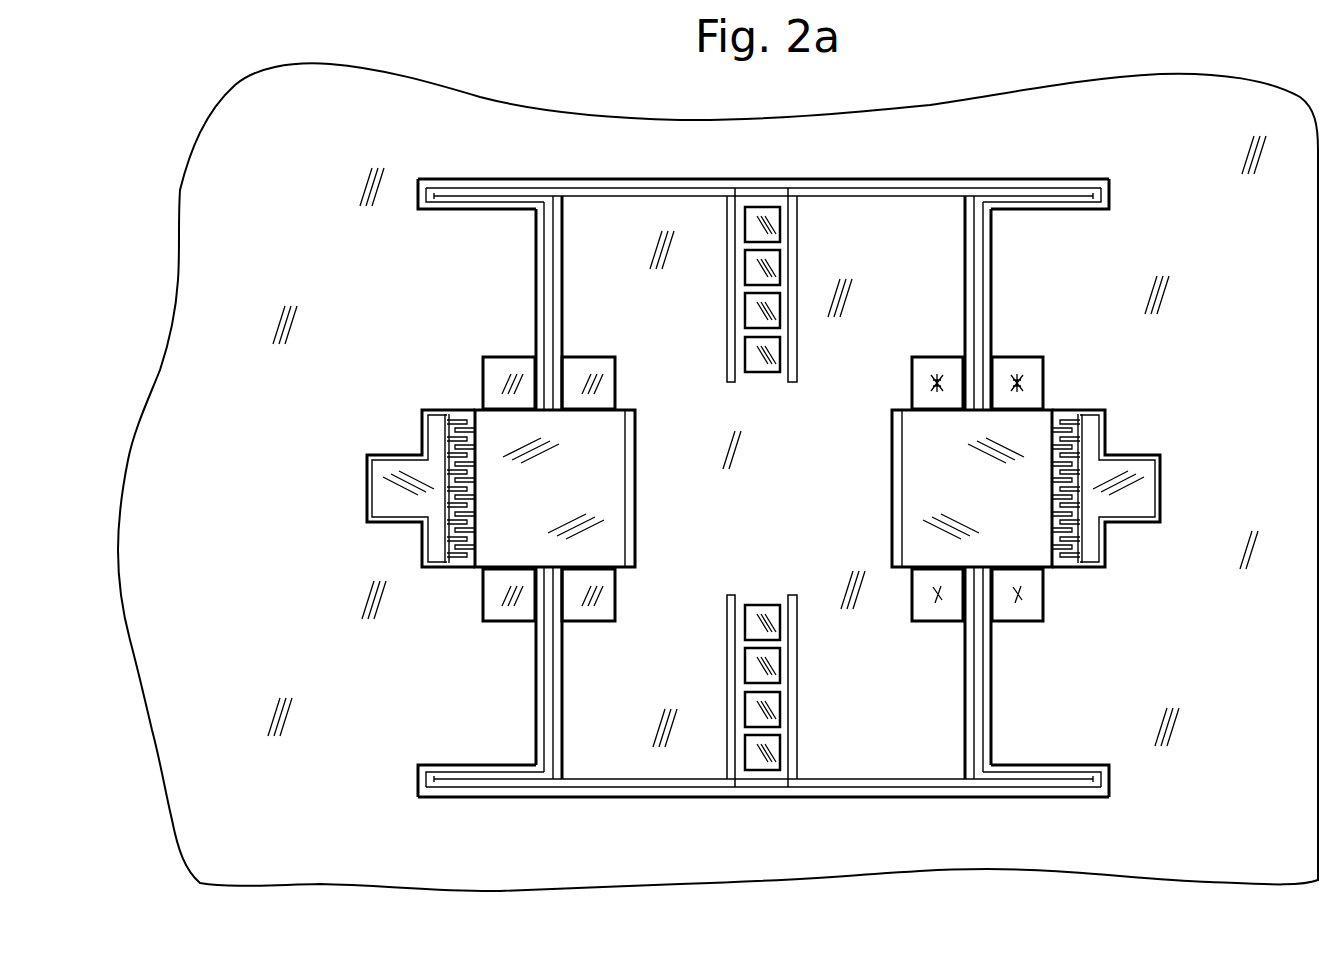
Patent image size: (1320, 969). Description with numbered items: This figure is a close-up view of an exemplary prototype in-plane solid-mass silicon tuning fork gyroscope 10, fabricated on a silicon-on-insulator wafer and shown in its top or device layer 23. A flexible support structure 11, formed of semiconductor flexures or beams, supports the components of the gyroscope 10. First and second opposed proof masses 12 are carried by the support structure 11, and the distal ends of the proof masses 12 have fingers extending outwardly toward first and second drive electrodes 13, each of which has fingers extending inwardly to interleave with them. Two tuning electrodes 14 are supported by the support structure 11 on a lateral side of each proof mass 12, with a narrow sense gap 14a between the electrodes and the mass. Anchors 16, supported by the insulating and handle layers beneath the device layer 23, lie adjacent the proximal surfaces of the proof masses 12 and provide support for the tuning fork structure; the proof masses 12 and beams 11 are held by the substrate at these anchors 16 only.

The in-plane solid-mass single-crystal silicon tuning fork gyroscope 10 is at (175, 95).
The flexible support structure 11 is at (543, 292).
The proof mass 12 is at (498, 432).
The drive electrode 13 is at (403, 464).
The tuning electrode 14 is at (500, 370).
The sense gap 14a is at (595, 412).
The anchor 16 is at (623, 318).
The device layer 23 is at (177, 258).